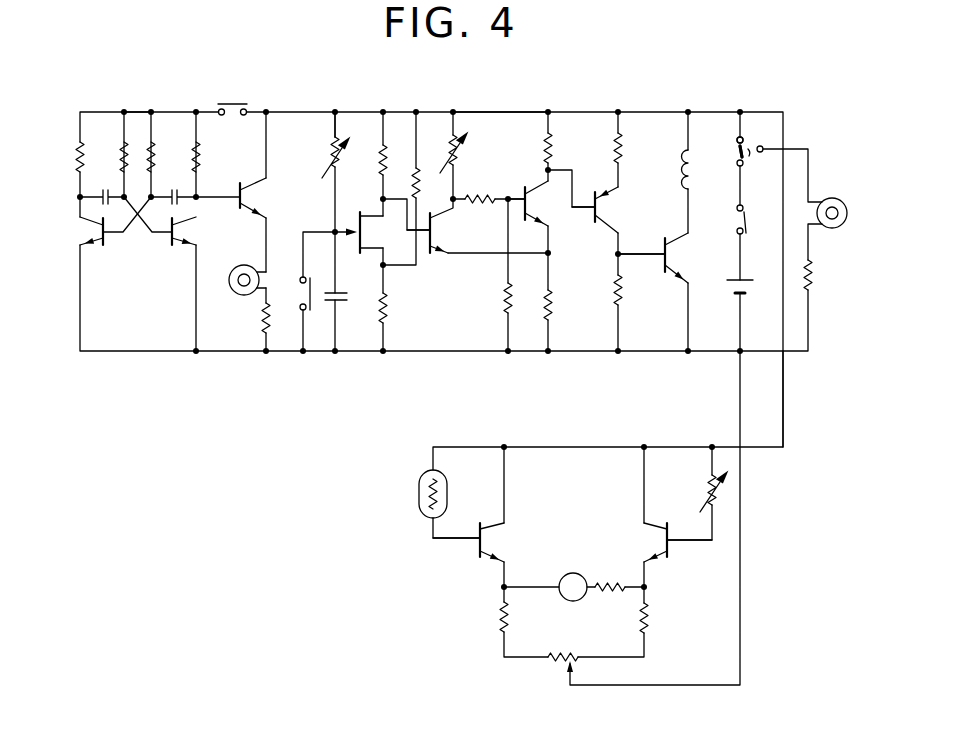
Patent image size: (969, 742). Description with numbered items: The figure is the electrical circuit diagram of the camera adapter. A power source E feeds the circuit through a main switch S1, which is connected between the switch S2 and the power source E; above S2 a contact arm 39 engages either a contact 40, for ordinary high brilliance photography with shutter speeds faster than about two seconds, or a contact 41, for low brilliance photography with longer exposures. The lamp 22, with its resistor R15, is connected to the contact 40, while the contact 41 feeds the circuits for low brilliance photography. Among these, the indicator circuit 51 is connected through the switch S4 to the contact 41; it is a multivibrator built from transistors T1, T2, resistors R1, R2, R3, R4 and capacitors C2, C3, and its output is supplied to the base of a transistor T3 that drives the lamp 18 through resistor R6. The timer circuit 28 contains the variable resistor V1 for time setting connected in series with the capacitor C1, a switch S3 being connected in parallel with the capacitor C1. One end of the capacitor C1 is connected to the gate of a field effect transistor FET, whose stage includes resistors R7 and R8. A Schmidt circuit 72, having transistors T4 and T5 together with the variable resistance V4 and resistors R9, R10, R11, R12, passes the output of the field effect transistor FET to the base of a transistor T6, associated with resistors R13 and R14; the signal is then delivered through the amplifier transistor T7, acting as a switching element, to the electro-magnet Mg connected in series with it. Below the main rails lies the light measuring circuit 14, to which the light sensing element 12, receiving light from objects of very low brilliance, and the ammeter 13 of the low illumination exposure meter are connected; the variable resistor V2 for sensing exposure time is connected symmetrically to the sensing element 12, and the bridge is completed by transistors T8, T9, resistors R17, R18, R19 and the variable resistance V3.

The indicator circuit 51 is at (134, 108).
The switch S4 is at (232, 98).
The timer circuit 28 is at (334, 130).
The Schmidt circuit 72 is at (497, 112).
The resistor R1 is at (78, 160).
The resistor R2 is at (122, 155).
The resistor R3 is at (153, 158).
The resistor R4 is at (199, 158).
The capacitor C2 is at (106, 190).
The capacitor C3 is at (175, 190).
The capacitor C1 is at (346, 301).
The transistor T1 is at (108, 244).
The transistor T2 is at (172, 245).
The transistor T3 is at (240, 205).
The transistor T4 is at (433, 252).
The transistor T5 is at (524, 218).
The transistor T6 is at (595, 220).
The amplifier transistor T7 is at (665, 250).
The transistor T8 is at (478, 549).
The transistor T9 is at (672, 552).
The lamp 18 is at (233, 268).
The resistor R6 is at (267, 318).
The switch S3 is at (303, 284).
The variable resistor V1 is at (327, 170).
The field effect transistor FET is at (357, 215).
The resistor R7 is at (385, 157).
The resistor R8 is at (388, 311).
The variable resistor V4 is at (460, 150).
The resistor R9 is at (485, 197).
The resistor R10 is at (505, 296).
The resistor R11 is at (548, 146).
The resistor R12 is at (554, 298).
The resistor R13 is at (615, 152).
The resistor R14 is at (623, 294).
The electro-magnet Mg is at (694, 170).
The switch S2 is at (752, 159).
The contact arm 39 is at (738, 150).
The contact 41 is at (743, 138).
The contact 40 is at (764, 146).
The main switch S1 is at (749, 224).
The power source E is at (752, 288).
The lamp 22 is at (848, 222).
The resistor R15 is at (814, 278).
The light measuring circuit 14 is at (784, 430).
The light sensing element 12 is at (446, 497).
The ammeter 13 is at (573, 573).
The resistor R17 is at (500, 618).
The resistor R18 is at (612, 586).
The resistor R19 is at (648, 622).
The variable resistor V2 is at (704, 492).
The variable resistor V3 is at (567, 656).